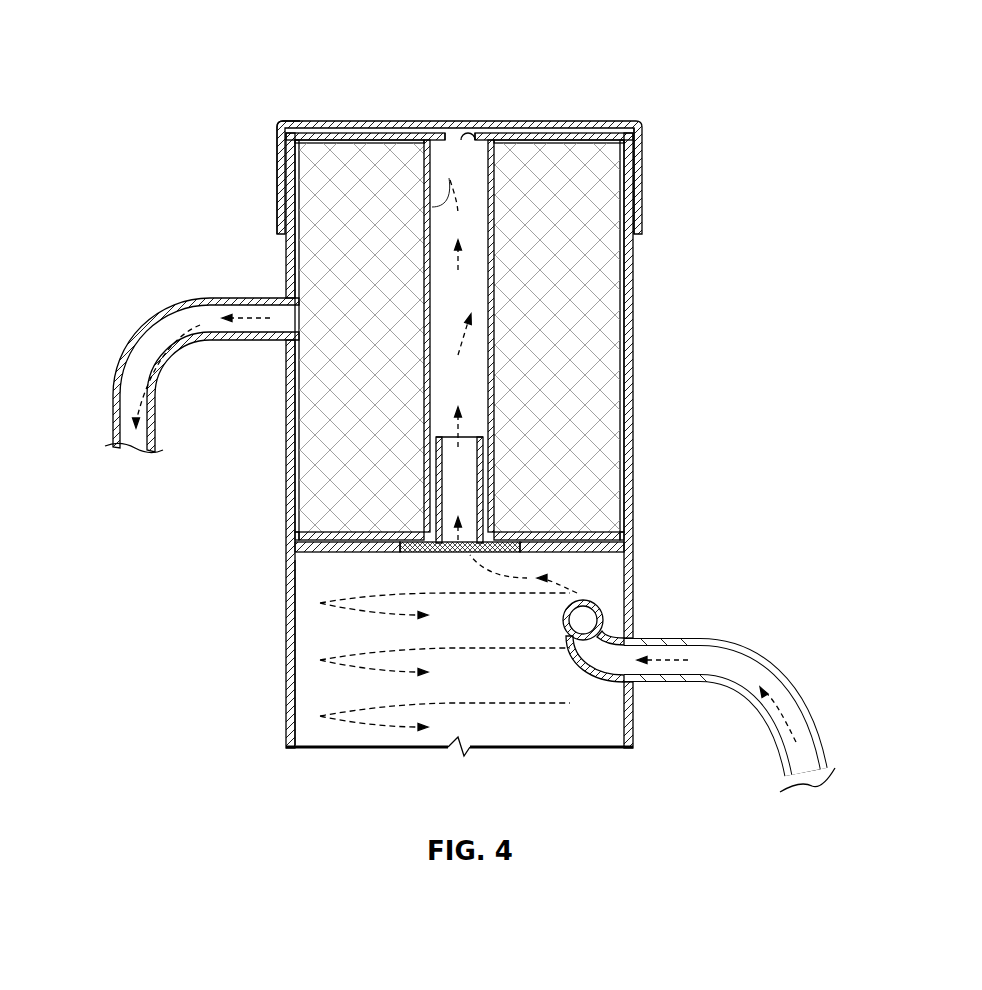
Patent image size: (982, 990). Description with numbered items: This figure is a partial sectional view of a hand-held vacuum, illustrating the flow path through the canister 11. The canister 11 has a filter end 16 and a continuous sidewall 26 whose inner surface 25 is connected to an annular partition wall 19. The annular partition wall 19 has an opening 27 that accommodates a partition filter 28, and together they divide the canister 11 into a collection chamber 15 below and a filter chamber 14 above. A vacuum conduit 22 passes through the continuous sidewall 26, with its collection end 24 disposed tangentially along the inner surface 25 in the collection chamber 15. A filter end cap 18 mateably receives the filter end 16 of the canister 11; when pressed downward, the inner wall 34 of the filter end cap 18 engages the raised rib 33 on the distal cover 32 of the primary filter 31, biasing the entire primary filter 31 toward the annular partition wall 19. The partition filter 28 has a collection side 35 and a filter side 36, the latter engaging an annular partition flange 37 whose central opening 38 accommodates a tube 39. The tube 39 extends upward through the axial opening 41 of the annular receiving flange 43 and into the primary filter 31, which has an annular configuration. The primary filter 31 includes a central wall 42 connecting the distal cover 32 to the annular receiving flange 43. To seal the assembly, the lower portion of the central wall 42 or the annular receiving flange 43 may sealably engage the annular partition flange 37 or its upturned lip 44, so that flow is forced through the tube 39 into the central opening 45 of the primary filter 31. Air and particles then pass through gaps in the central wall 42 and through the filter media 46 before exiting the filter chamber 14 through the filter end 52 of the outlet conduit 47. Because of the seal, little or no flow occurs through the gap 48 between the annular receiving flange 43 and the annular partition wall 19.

The canister 11 is at (648, 300).
The filter chamber 14 is at (313, 185).
The collection chamber 15 is at (435, 716).
The filter end 16 is at (634, 136).
The filter end cap 18 is at (590, 120).
The annular partition wall 19 is at (637, 538).
The vacuum conduit 22 is at (757, 657).
The collection end 24 is at (580, 603).
The inner surface 25 is at (293, 615).
The continuous sidewall 26 is at (637, 253).
The opening 27 is at (408, 553).
The partition filter 28 is at (452, 528).
The primary filter 31 is at (297, 232).
The distal cover 32 is at (362, 138).
The raised rib 33 is at (462, 138).
The inner wall 34 is at (280, 120).
The collection side 35 is at (483, 545).
The filter side 36 is at (456, 445).
The annular partition flange 37 is at (403, 532).
The central opening 38 is at (445, 661).
The tube 39 is at (443, 447).
The axial opening 41 is at (473, 548).
The central wall 42 is at (448, 175).
The annular receiving flange 43 is at (560, 527).
The upturned lip 44 is at (490, 500).
The central opening 45 is at (470, 245).
The filter media 46 is at (479, 337).
The outlet conduit 47 is at (145, 330).
The gap 48 is at (299, 539).
The filter end 52 is at (283, 327).